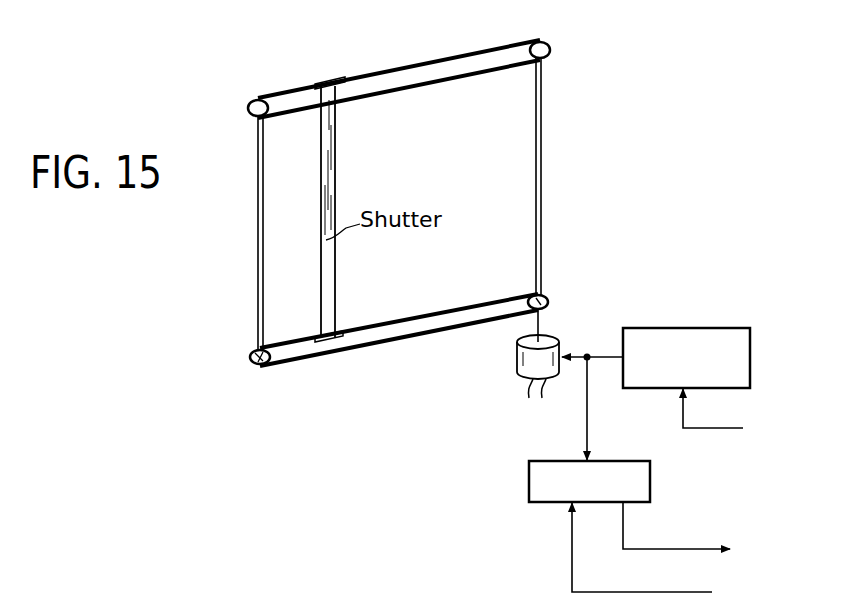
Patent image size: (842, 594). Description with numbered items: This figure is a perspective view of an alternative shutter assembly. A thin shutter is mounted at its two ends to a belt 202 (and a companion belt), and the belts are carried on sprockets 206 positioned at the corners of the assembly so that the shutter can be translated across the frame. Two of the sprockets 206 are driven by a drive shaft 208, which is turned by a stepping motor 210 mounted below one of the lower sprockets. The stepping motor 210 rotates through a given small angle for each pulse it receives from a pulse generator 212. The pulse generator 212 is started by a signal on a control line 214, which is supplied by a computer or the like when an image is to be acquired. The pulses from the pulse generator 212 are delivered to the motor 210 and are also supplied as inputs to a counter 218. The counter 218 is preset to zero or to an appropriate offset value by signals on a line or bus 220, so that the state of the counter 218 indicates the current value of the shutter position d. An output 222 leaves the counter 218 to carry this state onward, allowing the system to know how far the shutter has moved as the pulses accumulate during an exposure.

The belt 202 is at (421, 62).
The sprockets 206 is at (255, 105).
The drive shaft 208 is at (542, 195).
The stepping motor 210 is at (515, 363).
The pulse generator 212 is at (712, 336).
The control line 214 is at (690, 427).
The counter 218 is at (648, 480).
The line or bus 220 is at (606, 592).
The counter output 222 is at (640, 549).